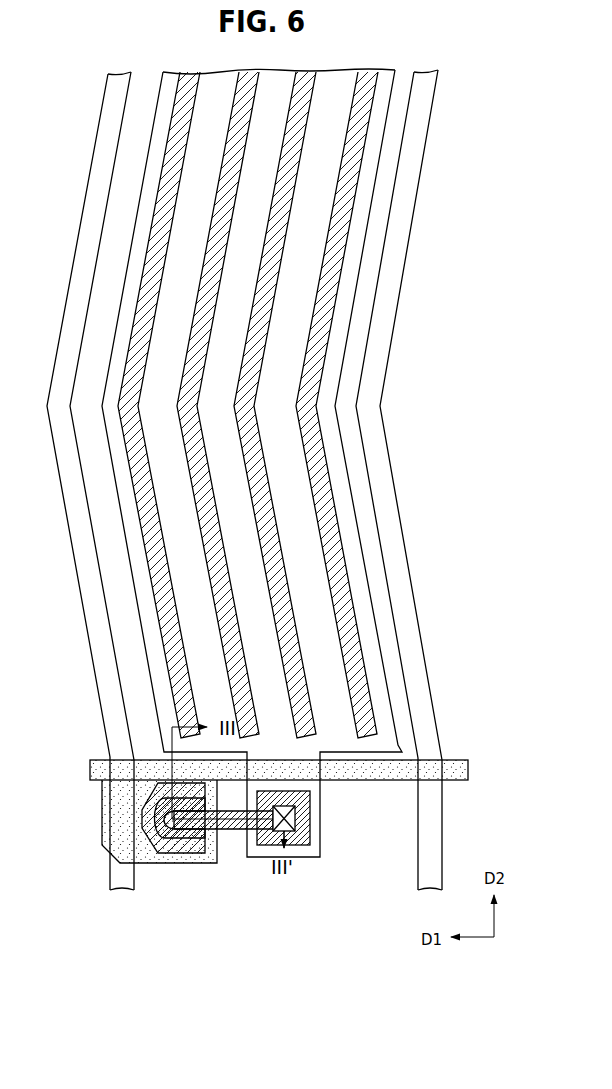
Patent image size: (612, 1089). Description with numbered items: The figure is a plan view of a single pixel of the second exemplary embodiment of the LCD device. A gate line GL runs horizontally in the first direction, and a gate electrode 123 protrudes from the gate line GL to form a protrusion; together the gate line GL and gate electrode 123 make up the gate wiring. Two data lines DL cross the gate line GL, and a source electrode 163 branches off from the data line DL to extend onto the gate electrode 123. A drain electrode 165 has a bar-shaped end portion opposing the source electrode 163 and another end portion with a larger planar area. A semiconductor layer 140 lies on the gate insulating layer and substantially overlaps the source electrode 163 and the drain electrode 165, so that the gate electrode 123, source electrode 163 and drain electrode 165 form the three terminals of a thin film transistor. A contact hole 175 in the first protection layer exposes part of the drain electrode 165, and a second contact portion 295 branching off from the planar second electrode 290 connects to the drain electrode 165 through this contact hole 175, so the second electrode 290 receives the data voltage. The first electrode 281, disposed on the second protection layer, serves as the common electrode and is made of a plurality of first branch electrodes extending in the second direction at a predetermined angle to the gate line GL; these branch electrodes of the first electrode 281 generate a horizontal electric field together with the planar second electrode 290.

The gate line GL is at (97, 770).
The data line DL is at (78, 510).
The gate electrode 123 is at (103, 813).
The semiconductor layer 140 is at (173, 852).
The source electrode 163 is at (155, 784).
The drain electrode 165 is at (196, 842).
The contact hole 175 is at (293, 836).
The first electrode 281 is at (365, 672).
The second electrode 290 is at (353, 313).
The second contact portion 295 is at (321, 820).